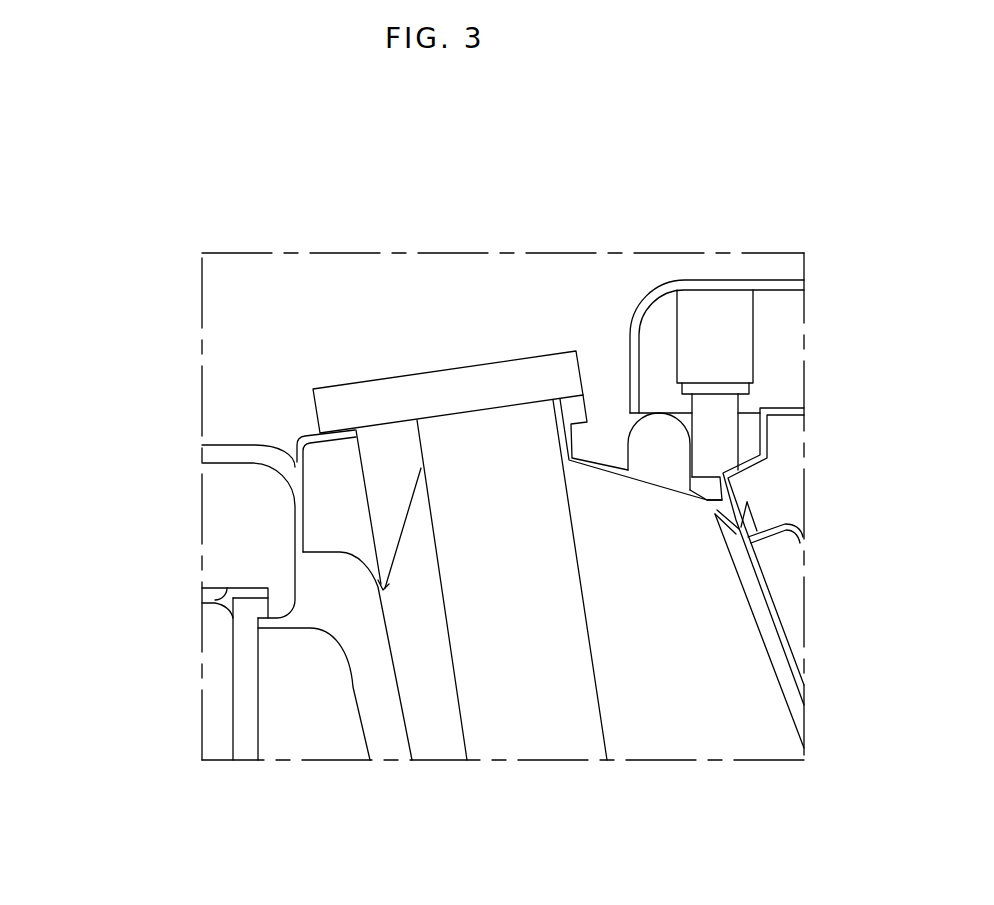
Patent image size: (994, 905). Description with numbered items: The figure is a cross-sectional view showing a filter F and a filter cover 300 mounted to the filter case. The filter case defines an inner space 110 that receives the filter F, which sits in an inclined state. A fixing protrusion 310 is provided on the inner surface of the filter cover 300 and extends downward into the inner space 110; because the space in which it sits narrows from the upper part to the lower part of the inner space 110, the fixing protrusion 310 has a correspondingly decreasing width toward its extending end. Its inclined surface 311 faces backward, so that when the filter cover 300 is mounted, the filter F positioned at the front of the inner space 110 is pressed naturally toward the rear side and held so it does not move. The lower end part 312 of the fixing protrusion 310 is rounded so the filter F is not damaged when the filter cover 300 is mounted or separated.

The filter cover 300 is at (422, 395).
The fixing protrusion 310 is at (390, 480).
The inclined surface 311 is at (402, 540).
The lower end part 312 is at (387, 583).
The inner space 110 is at (427, 722).
The filter F is at (532, 718).